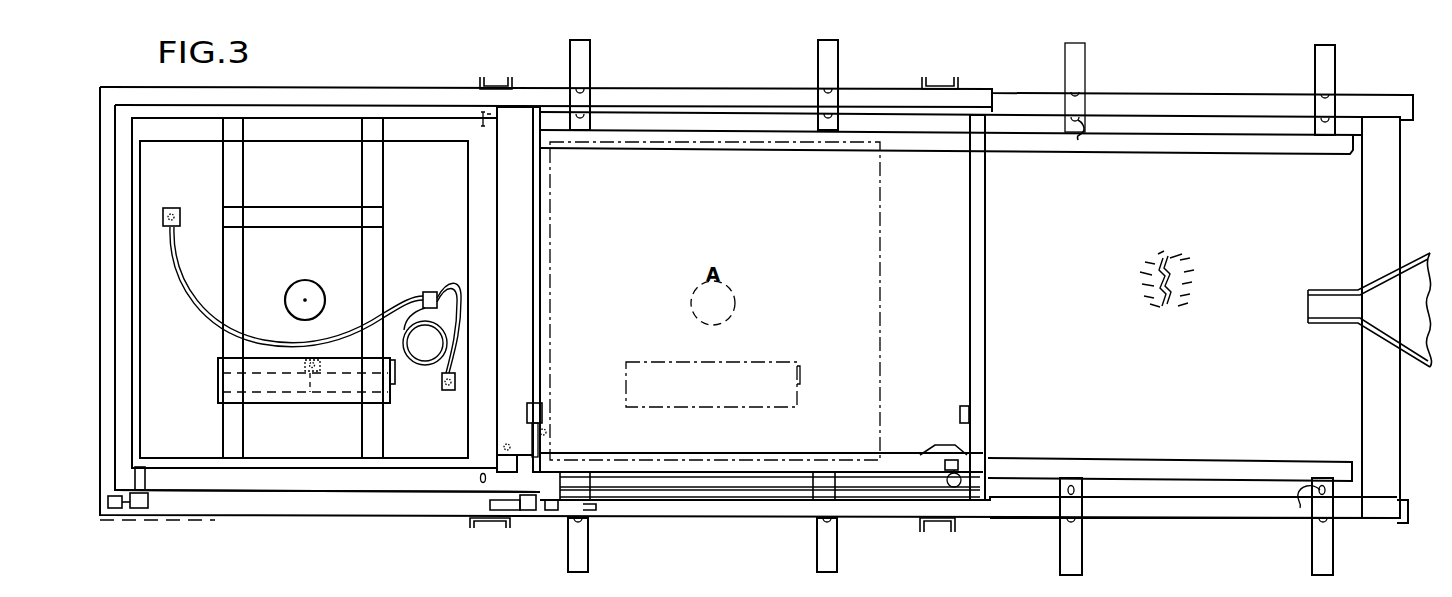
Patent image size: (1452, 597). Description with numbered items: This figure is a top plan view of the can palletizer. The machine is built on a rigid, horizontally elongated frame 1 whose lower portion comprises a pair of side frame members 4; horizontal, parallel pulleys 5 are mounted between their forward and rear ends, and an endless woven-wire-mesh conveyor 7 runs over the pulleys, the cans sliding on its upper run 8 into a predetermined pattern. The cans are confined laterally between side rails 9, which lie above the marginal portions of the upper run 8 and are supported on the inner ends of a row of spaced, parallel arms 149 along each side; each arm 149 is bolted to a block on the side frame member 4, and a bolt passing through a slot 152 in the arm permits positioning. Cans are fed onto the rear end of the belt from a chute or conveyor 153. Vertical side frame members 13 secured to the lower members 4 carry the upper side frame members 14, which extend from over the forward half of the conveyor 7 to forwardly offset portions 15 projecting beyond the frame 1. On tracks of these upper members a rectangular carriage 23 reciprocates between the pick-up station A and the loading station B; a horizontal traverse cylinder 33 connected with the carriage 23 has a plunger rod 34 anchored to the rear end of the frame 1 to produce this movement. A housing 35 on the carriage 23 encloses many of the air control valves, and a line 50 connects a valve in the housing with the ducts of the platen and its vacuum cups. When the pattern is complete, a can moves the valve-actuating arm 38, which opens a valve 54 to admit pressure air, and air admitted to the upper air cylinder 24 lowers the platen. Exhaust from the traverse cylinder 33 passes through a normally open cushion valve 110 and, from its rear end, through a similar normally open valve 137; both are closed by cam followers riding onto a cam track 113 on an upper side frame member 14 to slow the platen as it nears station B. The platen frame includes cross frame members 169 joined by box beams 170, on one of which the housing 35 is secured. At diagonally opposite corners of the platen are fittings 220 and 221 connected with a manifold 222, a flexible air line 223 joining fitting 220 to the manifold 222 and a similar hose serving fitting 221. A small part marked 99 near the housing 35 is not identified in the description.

The frame 1 is at (728, 522).
The side frame members 4 is at (1186, 515).
The pulleys 5 is at (918, 422).
The endless conveyor 7 is at (676, 164).
The upper run of the conveyor 8 is at (1250, 163).
The side rails 9 is at (1228, 147).
The vertical side frame members 13 is at (492, 85).
The upper side frame members 14 is at (800, 512).
The forwardly offset portions 15 is at (377, 508).
The carriage 23 is at (403, 116).
The upper air cylinder 24 is at (287, 297).
The traverse cylinder 33 is at (296, 484).
The plunger rod 34 is at (672, 487).
The housing 35 is at (284, 400).
The valve-actuating arm 38 is at (950, 453).
The line 50 is at (423, 366).
The valve 54 is at (972, 413).
The connector 99 is at (316, 380).
The cushion valve 110 is at (528, 512).
The cam track 113 is at (585, 511).
The valve 137 is at (137, 510).
The arms 149 is at (584, 67).
The slot 152 is at (1080, 140).
The chute or conveyor 153 is at (1346, 324).
The cross frame members 169 is at (366, 163).
The box beams 170 is at (316, 226).
The fitting 220 is at (183, 218).
The fitting 221 is at (447, 393).
The manifold 222 is at (427, 292).
The flexible air line 223 is at (208, 306).